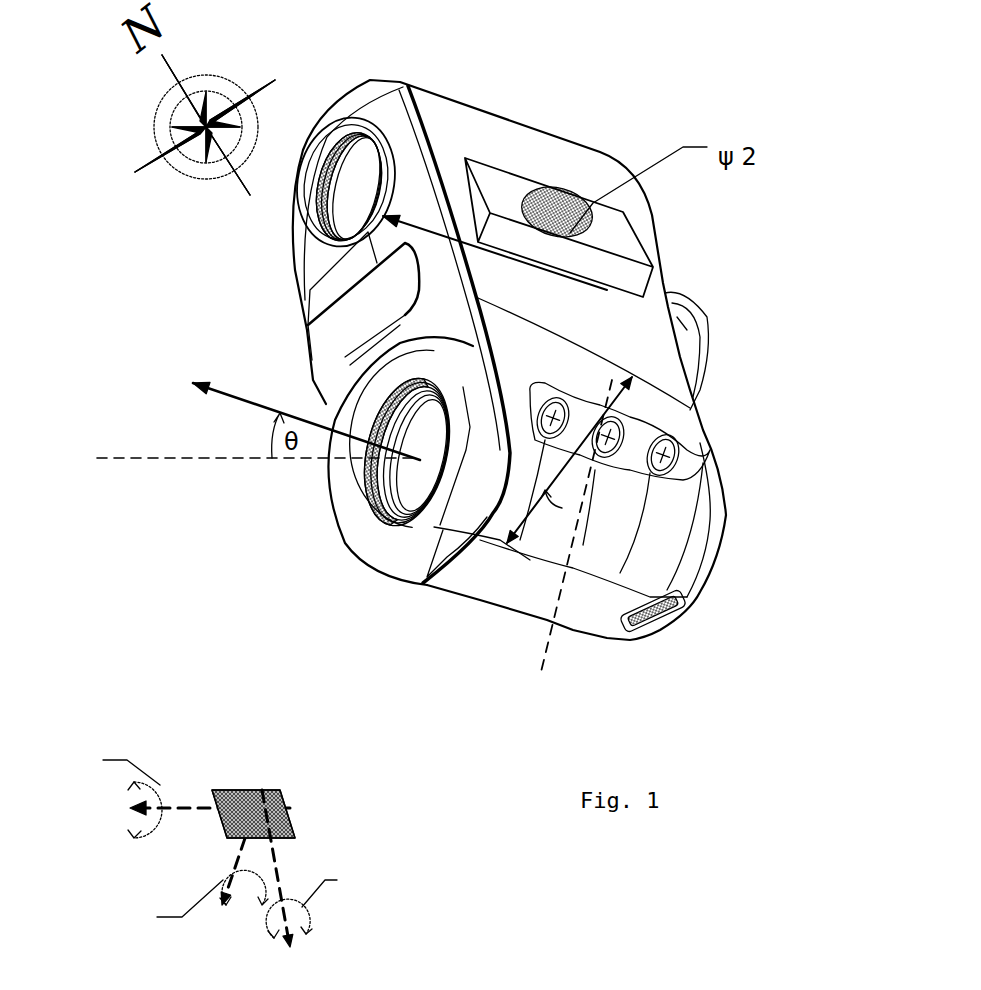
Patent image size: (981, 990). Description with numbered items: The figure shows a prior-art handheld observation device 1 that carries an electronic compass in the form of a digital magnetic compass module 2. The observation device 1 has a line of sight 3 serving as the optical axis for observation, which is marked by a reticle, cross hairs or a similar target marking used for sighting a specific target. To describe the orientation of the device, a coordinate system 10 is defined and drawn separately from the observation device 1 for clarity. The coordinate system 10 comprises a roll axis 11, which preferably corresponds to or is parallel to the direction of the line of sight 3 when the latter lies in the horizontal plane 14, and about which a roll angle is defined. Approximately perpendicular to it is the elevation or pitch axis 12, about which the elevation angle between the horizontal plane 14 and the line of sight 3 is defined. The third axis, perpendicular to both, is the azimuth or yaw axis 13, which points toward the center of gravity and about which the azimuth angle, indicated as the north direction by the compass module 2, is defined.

The handheld observation device 1 is at (497, 83).
The digital magnetic compass module 2 is at (517, 182).
The line of sight 3 is at (243, 398).
The coordinate system 10 is at (300, 800).
The roll axis 11 is at (232, 458).
The pitch axis 12 is at (278, 887).
The yaw axis 13 is at (547, 637).
The horizontal plane 14 is at (247, 800).